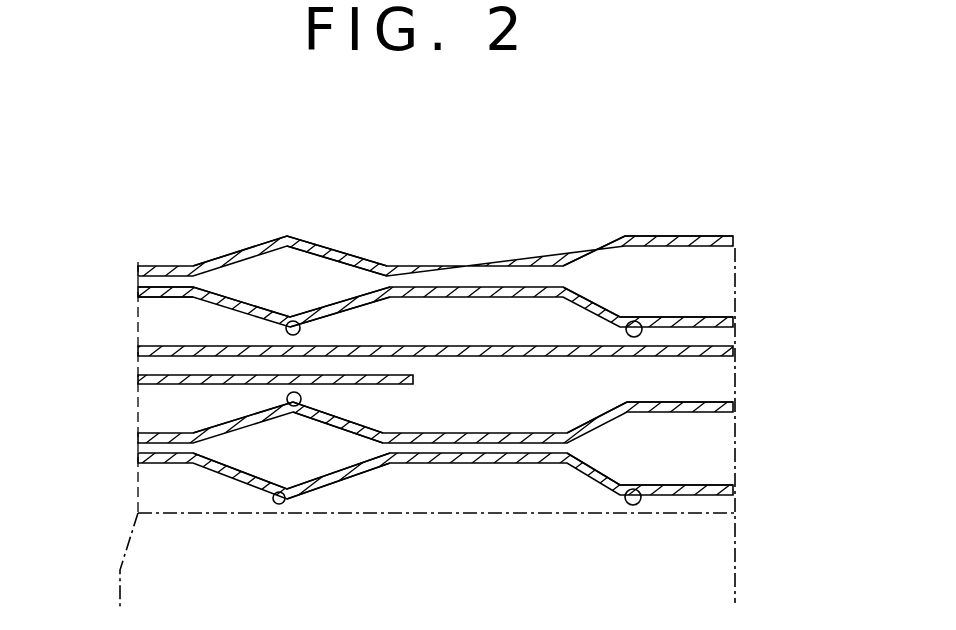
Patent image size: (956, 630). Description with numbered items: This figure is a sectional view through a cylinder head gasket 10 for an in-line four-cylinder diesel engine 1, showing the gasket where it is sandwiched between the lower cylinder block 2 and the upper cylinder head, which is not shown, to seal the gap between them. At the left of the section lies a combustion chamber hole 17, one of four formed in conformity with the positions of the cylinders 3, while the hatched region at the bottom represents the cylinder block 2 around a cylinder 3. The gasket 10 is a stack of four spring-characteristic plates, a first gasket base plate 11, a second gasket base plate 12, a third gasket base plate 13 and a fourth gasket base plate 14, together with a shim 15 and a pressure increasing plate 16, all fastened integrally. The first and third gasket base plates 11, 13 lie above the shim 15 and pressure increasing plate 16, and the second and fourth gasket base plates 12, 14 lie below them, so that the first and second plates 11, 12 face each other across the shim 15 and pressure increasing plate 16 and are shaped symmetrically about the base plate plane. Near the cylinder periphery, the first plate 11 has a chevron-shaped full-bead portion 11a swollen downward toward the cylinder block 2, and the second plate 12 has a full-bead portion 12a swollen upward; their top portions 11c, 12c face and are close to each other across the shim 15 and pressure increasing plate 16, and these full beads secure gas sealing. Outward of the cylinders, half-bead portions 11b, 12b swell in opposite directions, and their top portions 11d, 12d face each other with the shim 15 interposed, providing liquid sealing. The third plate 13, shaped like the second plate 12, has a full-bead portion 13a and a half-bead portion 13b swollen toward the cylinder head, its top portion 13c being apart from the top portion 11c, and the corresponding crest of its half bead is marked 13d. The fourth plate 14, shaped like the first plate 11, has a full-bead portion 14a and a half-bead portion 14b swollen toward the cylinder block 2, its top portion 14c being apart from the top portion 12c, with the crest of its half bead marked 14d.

The engine 1 is at (740, 505).
The cylinder block 2 is at (738, 533).
The cylinder 3 is at (118, 588).
The cylinder head gasket 10 is at (757, 214).
The first gasket base plate 11 is at (447, 297).
The full-bead portion 11a is at (346, 312).
The half-bead portion 11b is at (598, 322).
The top portion 11c is at (296, 321).
The top portion 11d is at (640, 322).
The second gasket base plate 12 is at (447, 432).
The full-bead portion 12a is at (345, 417).
The half-bead portion 12b is at (598, 416).
The top portion 12c is at (293, 406).
The top portion 12d is at (628, 402).
The third gasket base plate 13 is at (445, 266).
The full-bead portion 13a is at (343, 251).
The half-bead portion 13b is at (600, 248).
The top portion 13c is at (286, 236).
The end portion of third metal plate 13d is at (618, 236).
The fourth gasket base plate 14 is at (447, 464).
The full-bead portion 14a is at (345, 478).
The half-bead portion 14b is at (598, 491).
The top portion 14c is at (266, 496).
The end portion of fourth metal plate 14d is at (640, 494).
The shim 15 is at (138, 348).
The pressure increasing plate 16 is at (138, 378).
The combustion chamber hole 17 is at (137, 313).